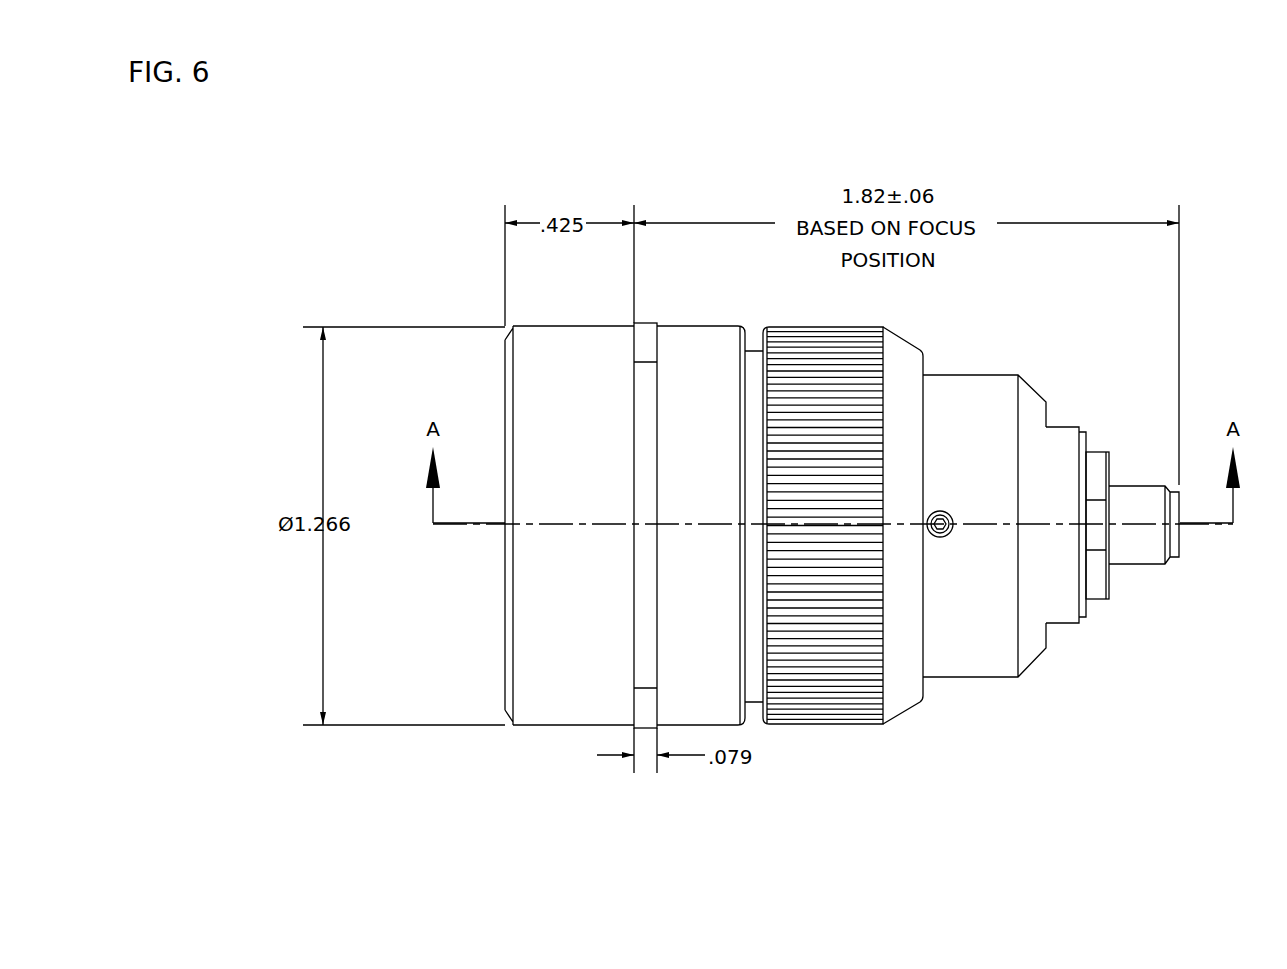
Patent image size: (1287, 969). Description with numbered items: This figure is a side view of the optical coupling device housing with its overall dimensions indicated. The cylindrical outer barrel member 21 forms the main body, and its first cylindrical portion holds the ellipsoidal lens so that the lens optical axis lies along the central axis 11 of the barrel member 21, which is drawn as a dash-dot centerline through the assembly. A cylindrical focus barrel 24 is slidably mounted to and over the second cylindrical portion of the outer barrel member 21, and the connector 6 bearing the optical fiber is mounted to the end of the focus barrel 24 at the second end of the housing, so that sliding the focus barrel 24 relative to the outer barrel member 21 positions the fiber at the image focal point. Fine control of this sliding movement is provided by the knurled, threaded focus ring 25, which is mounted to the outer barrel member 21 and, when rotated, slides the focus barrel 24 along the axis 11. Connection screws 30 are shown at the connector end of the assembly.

The cylindrical outer barrel member 21 is at (540, 708).
The focus ring 25 is at (825, 724).
The focus barrel 24 is at (982, 666).
The connector for multi-mode optical fiber 6 is at (1079, 622).
The connection screws 30 is at (1107, 583).
The axis for cylindrical housing 11 is at (1226, 533).